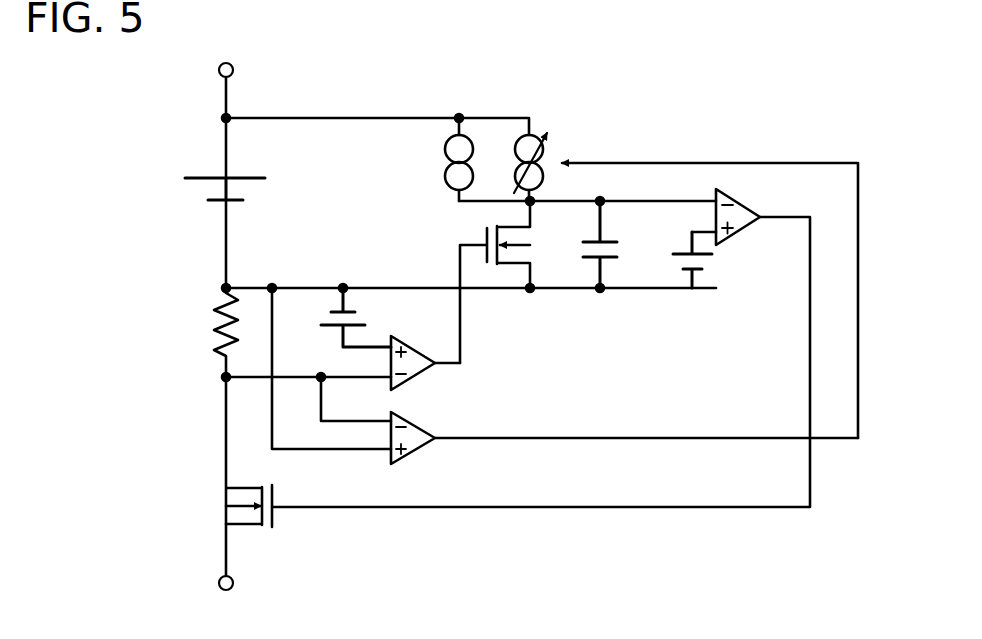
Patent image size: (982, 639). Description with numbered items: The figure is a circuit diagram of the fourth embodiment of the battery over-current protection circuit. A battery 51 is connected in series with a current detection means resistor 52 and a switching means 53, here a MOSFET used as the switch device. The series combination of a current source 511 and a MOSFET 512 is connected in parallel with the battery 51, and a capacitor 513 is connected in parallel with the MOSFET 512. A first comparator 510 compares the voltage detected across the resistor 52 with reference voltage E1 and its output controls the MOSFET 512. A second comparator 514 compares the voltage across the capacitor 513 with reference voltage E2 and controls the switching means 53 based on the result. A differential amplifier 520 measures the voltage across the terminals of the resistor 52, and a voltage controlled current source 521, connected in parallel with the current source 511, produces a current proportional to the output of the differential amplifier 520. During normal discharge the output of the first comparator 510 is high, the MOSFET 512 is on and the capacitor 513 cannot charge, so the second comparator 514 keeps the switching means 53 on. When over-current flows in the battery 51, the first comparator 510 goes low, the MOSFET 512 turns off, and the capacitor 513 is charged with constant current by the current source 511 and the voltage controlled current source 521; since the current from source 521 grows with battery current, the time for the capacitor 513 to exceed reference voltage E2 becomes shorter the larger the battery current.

The battery 51 is at (203, 188).
The current detection means resistor 52 is at (212, 320).
The switching means 53 is at (224, 509).
The first comparator 510 is at (420, 378).
The current source 511 is at (443, 158).
The MOSFET 512 is at (478, 233).
The capacitor 513 is at (617, 250).
The second comparator 514 is at (744, 197).
The differential amplifier 520 is at (420, 455).
The voltage controlled current source 521 is at (553, 148).
The reference voltage E1 is at (358, 318).
The reference voltage E2 is at (708, 262).